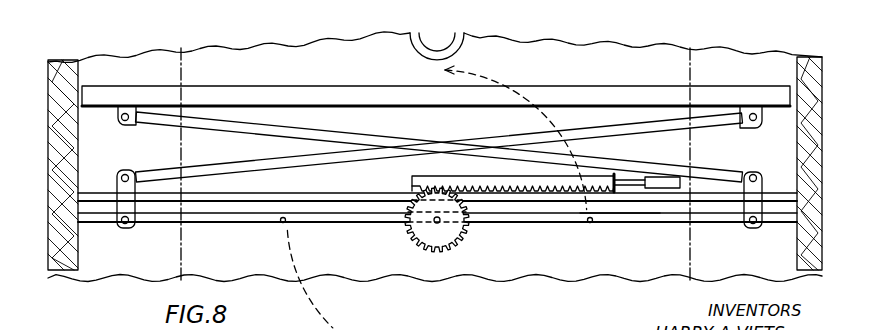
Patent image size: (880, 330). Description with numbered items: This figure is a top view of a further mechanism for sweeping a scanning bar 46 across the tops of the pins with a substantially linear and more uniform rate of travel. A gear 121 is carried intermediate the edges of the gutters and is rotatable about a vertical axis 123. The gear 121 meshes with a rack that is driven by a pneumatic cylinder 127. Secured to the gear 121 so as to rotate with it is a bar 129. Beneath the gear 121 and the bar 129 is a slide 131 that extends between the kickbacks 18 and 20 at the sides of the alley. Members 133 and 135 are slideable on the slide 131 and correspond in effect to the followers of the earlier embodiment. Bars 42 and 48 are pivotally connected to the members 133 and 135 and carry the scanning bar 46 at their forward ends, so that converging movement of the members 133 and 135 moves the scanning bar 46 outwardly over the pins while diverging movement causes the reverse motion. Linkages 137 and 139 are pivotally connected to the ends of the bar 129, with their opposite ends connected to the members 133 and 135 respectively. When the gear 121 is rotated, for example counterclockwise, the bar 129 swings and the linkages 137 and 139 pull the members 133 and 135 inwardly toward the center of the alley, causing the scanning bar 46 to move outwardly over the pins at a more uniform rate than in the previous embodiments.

The kickback 18 is at (46, 252).
The kickback 20 is at (808, 104).
The bar 42 is at (518, 158).
The scanning bar 46 is at (329, 97).
The bar 48 is at (245, 163).
The gear 121 is at (405, 237).
The vertical axis 123 is at (441, 222).
The pneumatic cylinder 127 is at (656, 177).
The bar 129 is at (304, 225).
The slide 131 is at (288, 194).
The member 133 is at (751, 226).
The member 135 is at (126, 229).
The linkage 137 is at (650, 222).
The linkage 139 is at (195, 224).